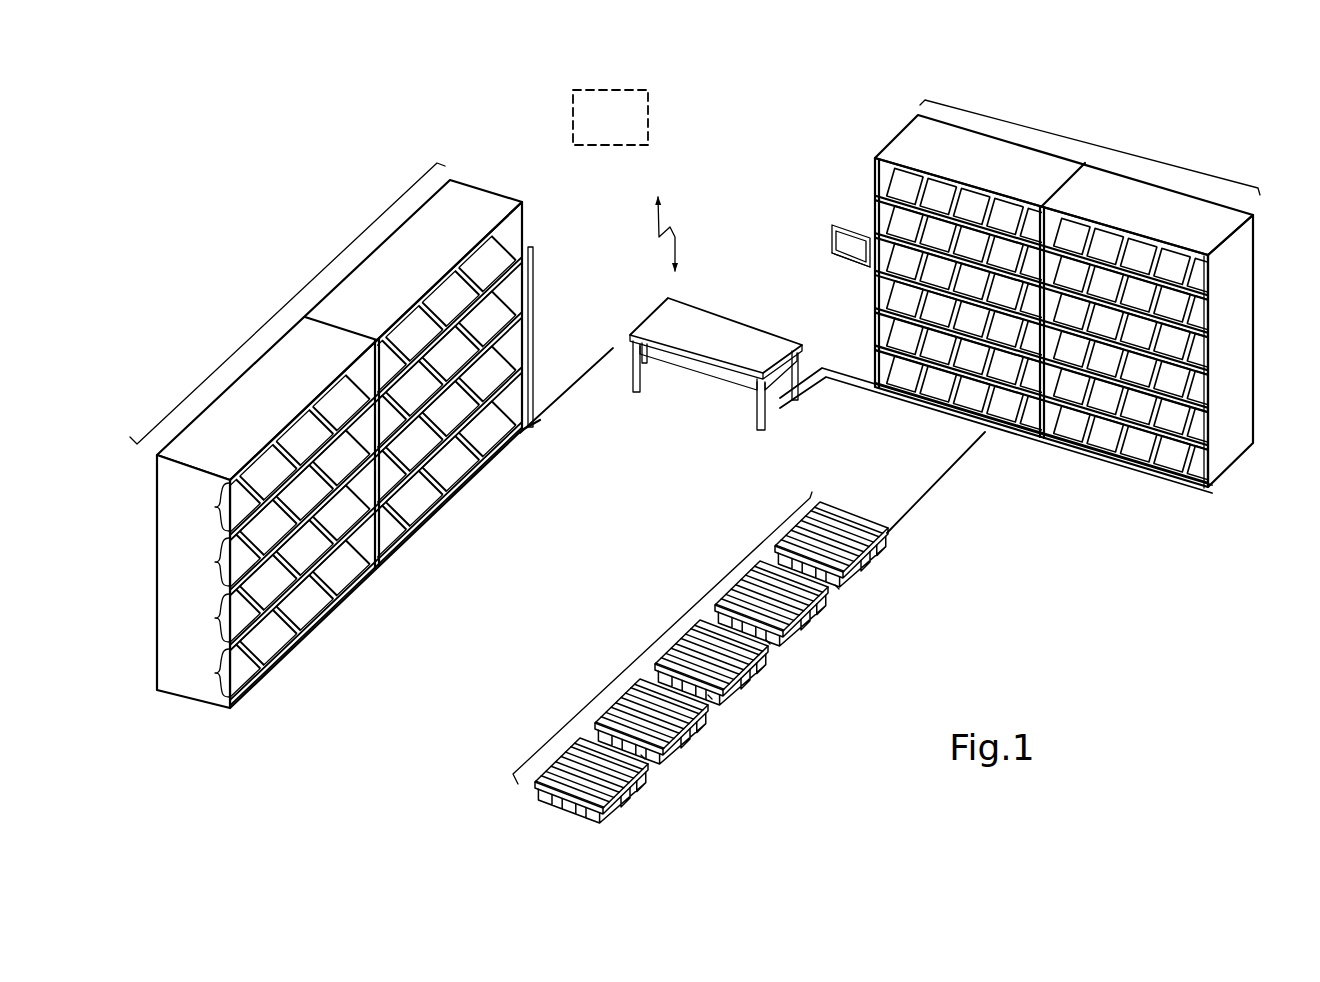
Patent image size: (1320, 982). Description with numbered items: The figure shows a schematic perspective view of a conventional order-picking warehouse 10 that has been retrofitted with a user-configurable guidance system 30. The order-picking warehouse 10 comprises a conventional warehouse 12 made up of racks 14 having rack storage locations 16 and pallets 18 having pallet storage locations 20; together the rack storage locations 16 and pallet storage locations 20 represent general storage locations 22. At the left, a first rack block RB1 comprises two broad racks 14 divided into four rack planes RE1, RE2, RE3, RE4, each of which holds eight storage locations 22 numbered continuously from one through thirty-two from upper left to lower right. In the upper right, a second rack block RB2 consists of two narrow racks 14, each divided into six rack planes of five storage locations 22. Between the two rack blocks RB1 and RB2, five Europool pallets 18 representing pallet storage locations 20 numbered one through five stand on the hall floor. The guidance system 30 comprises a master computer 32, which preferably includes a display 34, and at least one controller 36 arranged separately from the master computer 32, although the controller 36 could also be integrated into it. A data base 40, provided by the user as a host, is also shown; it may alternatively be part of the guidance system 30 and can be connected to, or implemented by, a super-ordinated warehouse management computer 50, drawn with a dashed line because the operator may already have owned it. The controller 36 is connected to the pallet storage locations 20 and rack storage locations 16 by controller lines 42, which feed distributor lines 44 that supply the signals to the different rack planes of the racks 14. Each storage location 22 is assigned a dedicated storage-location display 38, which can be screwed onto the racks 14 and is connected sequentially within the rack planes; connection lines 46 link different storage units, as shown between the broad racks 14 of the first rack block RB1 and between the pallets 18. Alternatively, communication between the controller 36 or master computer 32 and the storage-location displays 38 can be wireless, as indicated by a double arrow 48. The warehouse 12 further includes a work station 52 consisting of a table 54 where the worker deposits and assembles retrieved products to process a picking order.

The order-picking warehouse 10 is at (254, 224).
The warehouse 12 is at (614, 532).
The racks 14 is at (462, 181).
The rack storage locations 16 is at (472, 266).
The pallets 18 is at (832, 513).
The pallet storage locations 20 is at (878, 523).
The storage locations 22 is at (276, 311).
The guidance system 30 is at (799, 246).
The master computer 32 is at (845, 266).
The display 34 is at (836, 224).
The controller 36 is at (770, 392).
The storage-location display 38 is at (362, 538).
The data base 40 is at (655, 366).
The controller lines 42 is at (577, 394).
The distributor lines 44 is at (536, 330).
The connection lines 46 is at (768, 642).
The double arrow 48 is at (680, 233).
The warehouse management computer 50 is at (601, 129).
The work station 52 is at (752, 320).
The table 54 is at (700, 352).
The first rack block RB1 is at (157, 386).
The second rack block RB2 is at (1213, 159).
The rack plane RE1 is at (199, 507).
The rack plane RE2 is at (199, 562).
The rack plane RE3 is at (199, 618).
The rack plane RE4 is at (199, 673).